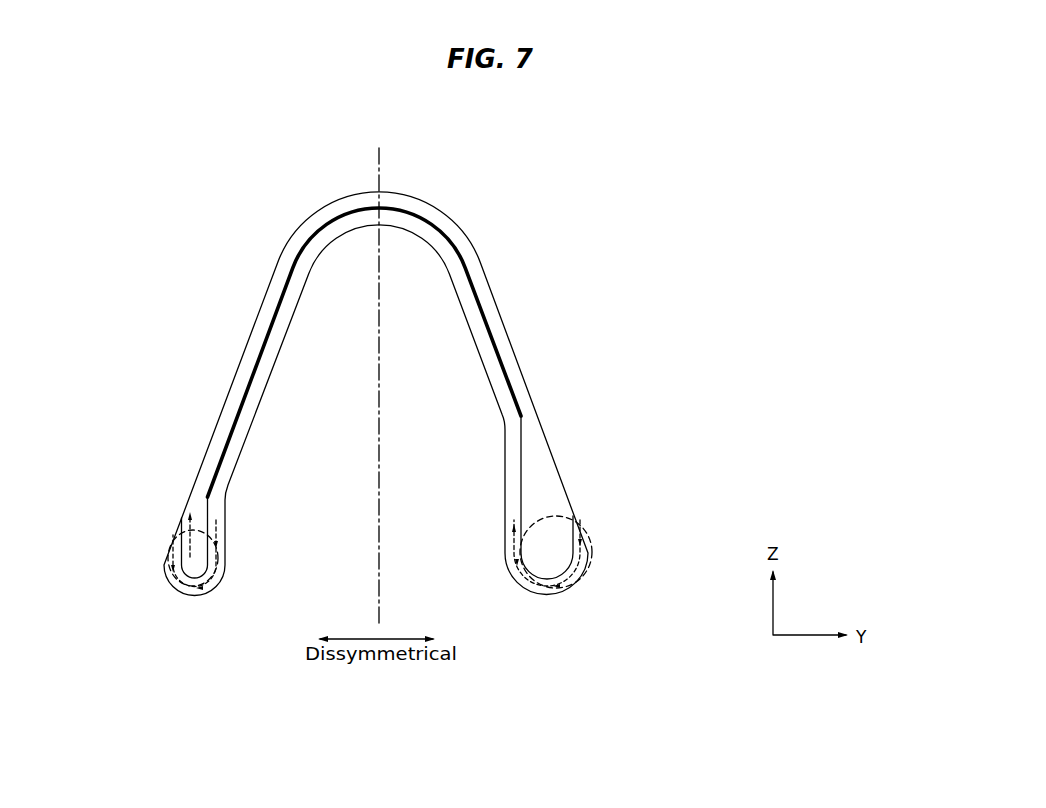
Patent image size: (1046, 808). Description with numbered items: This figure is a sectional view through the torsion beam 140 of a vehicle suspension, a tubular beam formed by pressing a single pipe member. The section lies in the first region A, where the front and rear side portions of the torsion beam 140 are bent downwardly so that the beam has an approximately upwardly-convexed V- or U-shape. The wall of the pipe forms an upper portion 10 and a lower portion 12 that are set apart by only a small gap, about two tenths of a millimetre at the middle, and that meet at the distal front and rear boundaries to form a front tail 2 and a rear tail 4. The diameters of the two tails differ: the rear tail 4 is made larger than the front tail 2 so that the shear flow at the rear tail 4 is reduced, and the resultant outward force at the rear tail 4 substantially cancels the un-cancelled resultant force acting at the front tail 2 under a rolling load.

The torsion beam 140 is at (376, 369).
The upper portion 10 is at (470, 263).
The lower portion 12 is at (464, 283).
The first region A is at (484, 219).
The front tail 2 is at (182, 524).
The rear tail 4 is at (567, 515).